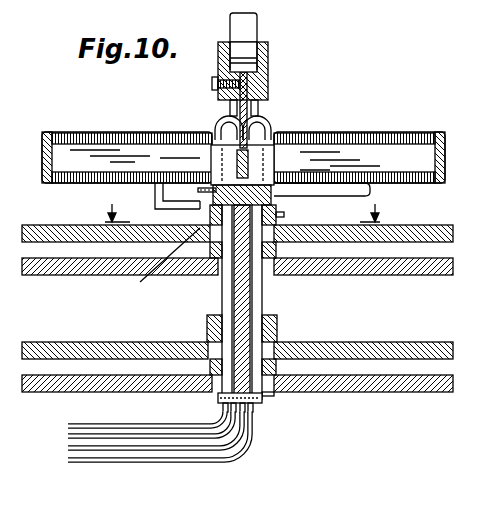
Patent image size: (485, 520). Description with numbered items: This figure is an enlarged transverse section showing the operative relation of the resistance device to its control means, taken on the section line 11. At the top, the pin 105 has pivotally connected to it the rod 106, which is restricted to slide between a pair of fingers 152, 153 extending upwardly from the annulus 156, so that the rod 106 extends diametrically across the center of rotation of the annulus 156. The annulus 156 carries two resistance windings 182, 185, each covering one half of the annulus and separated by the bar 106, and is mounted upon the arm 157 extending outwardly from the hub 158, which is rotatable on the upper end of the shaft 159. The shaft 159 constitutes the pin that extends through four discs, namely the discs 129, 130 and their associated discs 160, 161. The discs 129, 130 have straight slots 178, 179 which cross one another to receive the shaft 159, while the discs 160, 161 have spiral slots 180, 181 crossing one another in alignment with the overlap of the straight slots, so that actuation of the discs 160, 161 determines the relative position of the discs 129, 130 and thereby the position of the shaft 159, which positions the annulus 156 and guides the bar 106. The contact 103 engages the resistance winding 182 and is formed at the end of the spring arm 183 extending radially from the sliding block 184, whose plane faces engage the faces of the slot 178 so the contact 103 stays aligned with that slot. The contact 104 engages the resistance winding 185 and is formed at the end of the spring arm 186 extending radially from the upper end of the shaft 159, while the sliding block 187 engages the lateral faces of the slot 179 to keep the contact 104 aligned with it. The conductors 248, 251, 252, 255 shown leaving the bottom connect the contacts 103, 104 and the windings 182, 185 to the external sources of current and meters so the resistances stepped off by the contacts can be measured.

The section line 11 is at (244, 213).
The contact 103 is at (133, 132).
The contact 104 is at (378, 152).
The pin 105 is at (258, 35).
The rod 106 is at (268, 102).
The disc 129 is at (432, 228).
The disc 130 is at (430, 344).
The finger 152 is at (229, 103).
The finger 153 is at (275, 120).
The annulus 156 is at (47, 172).
The arm 157 is at (100, 134).
The hub 158 is at (212, 134).
The shaft 159 is at (221, 300).
The disc 160 is at (400, 273).
The disc 161 is at (388, 385).
The straight slot 178 is at (300, 244).
The straight slot 179 is at (276, 362).
The spiral slot 180 is at (275, 265).
The spiral slot 181 is at (264, 403).
The resistance winding 182 is at (64, 131).
The spring arm 183 is at (157, 208).
The sliding block 184 is at (151, 262).
The resistance winding 185 is at (452, 124).
The spring arm 186 is at (345, 197).
The sliding block 187 is at (280, 325).
The conductor 248 is at (150, 410).
The conductor 251 is at (66, 436).
The conductor 252 is at (66, 462).
The conductor 255 is at (66, 448).